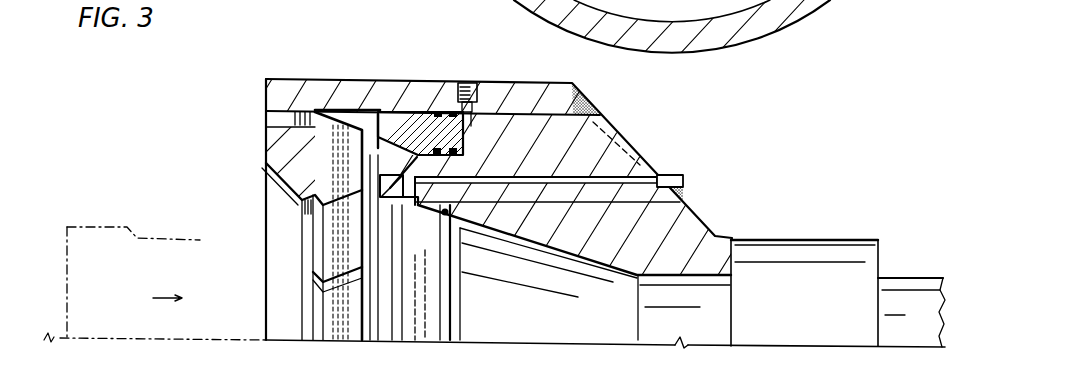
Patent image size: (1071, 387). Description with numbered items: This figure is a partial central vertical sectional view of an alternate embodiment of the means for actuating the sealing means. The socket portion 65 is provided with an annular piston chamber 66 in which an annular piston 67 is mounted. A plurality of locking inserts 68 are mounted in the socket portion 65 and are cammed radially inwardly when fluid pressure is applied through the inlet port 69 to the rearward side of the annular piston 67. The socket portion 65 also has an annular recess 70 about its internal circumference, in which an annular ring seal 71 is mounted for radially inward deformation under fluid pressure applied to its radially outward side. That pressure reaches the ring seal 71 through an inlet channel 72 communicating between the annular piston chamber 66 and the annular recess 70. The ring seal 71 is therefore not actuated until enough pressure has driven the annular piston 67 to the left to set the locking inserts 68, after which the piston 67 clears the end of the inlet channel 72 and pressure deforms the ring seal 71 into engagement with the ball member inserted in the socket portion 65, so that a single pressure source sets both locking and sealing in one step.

The socket portion 65 is at (620, 150).
The annular piston chamber 66 is at (421, 111).
The annular piston 67 is at (392, 120).
The locking inserts 68 is at (327, 146).
The inlet port 69 is at (473, 82).
The annular recess 70 is at (378, 148).
The annular ring seal 71 is at (380, 180).
The inlet channel 72 is at (415, 174).